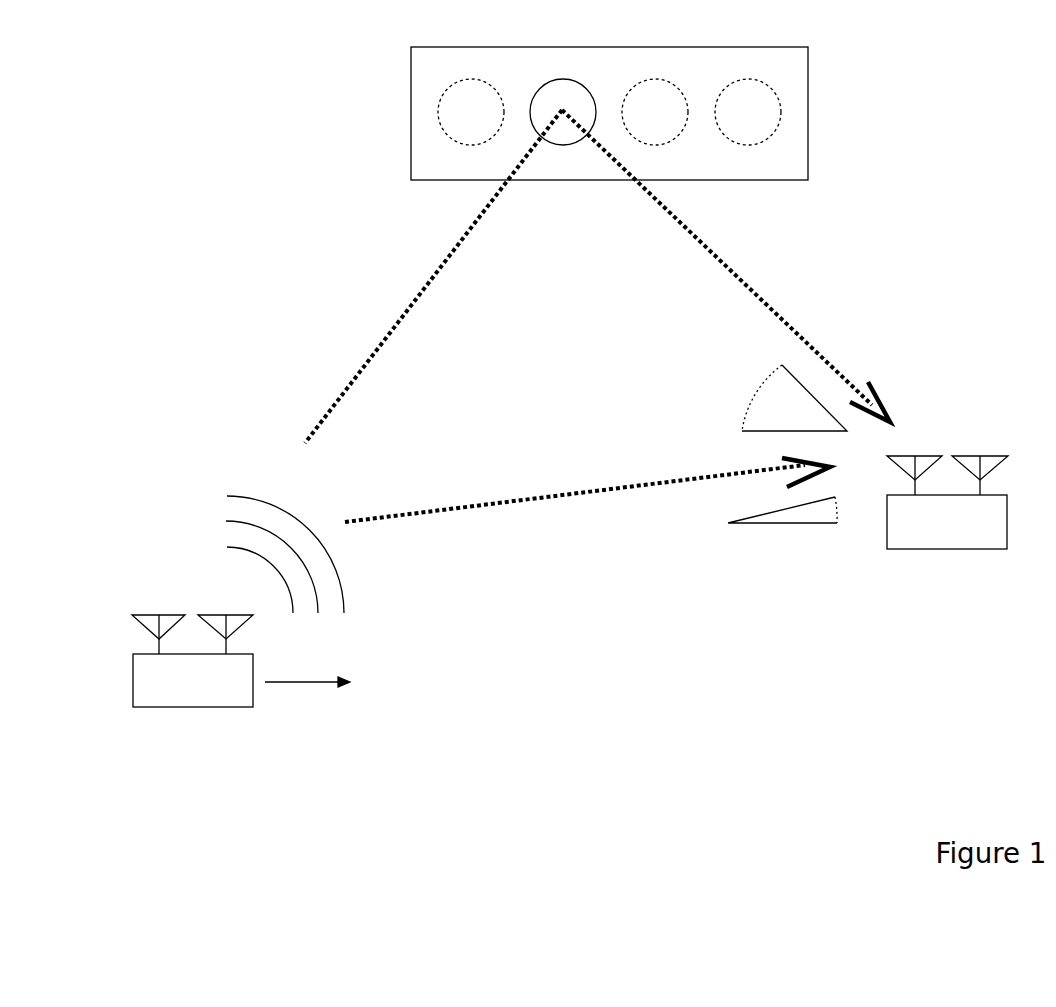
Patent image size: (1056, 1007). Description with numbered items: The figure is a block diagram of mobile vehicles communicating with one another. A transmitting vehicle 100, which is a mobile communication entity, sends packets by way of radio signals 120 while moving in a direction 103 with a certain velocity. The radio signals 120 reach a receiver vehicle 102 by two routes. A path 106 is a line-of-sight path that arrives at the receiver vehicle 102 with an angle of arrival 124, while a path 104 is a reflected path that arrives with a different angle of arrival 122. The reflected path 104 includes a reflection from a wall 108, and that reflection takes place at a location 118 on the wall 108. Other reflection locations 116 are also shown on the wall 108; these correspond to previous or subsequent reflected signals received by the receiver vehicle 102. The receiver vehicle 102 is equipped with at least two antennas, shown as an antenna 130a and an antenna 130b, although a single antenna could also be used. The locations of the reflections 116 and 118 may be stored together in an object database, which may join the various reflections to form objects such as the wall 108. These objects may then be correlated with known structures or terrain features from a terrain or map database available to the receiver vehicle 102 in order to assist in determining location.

The vehicle 100 is at (133, 697).
The receiver vehicle 102 is at (1007, 520).
The direction 103 is at (310, 687).
The path 104 is at (358, 378).
The path 106 is at (523, 497).
The wall 108 is at (411, 142).
The reflection locations 116 is at (470, 79).
The location 118 is at (565, 79).
The radio signals 120 is at (220, 522).
The angle of arrival 122 is at (740, 400).
The angle of arrival 124 is at (725, 530).
The antenna 130a is at (905, 456).
The antenna 130b is at (983, 456).